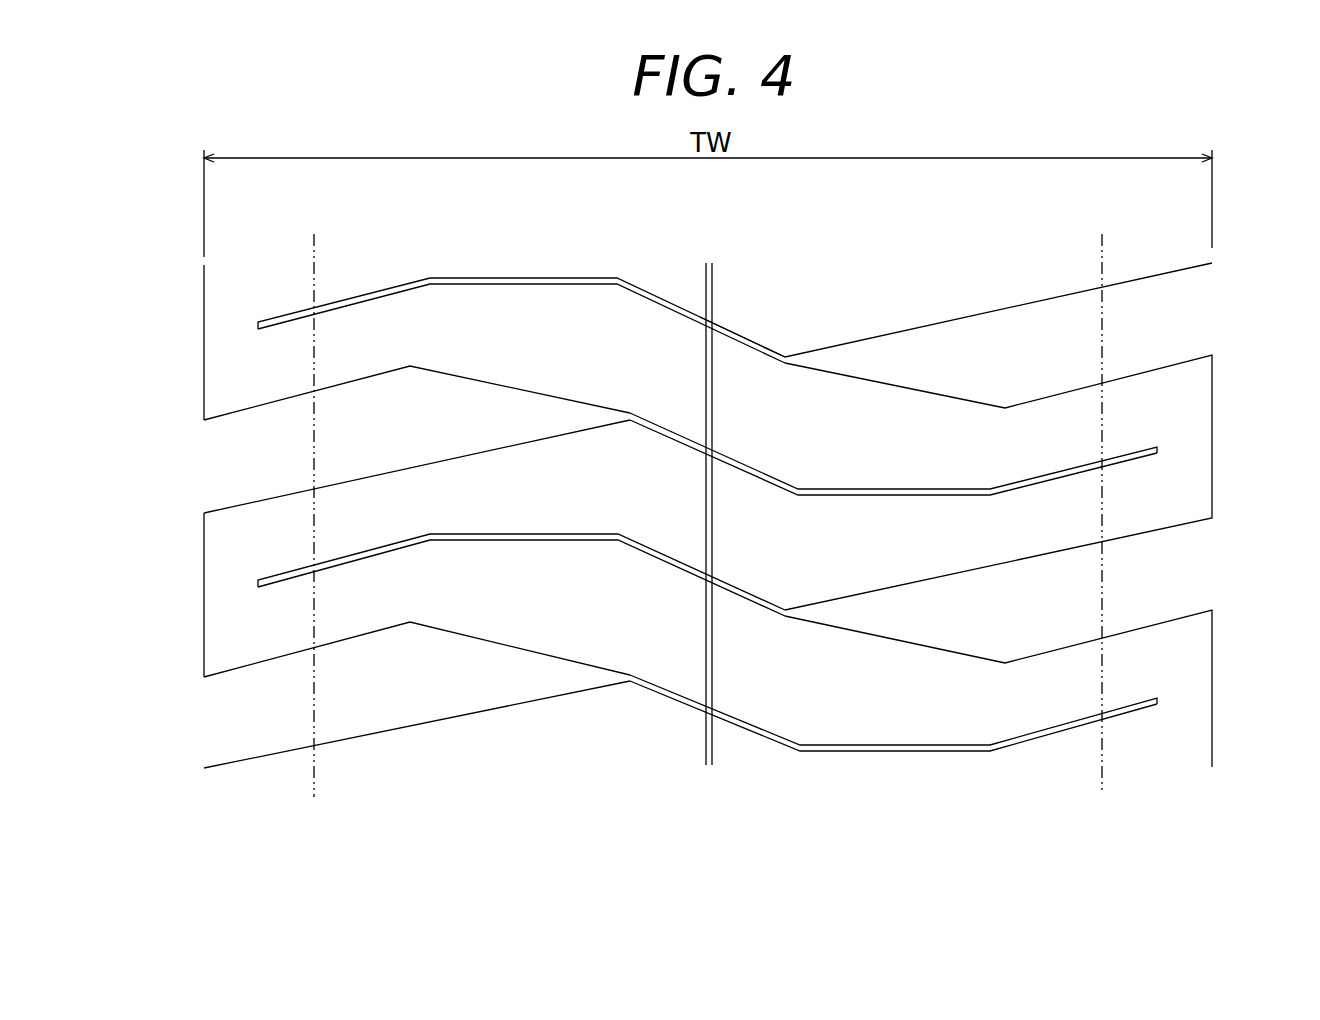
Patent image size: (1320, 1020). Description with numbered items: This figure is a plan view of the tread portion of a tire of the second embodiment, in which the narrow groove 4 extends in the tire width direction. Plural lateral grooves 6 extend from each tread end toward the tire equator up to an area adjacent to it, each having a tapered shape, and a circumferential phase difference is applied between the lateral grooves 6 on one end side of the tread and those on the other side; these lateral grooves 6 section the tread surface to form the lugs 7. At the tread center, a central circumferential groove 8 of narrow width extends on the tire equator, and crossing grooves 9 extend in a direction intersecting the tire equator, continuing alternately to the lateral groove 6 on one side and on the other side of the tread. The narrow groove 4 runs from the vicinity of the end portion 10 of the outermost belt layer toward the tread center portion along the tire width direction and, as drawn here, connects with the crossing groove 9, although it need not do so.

The narrow groove 4 is at (372, 297).
The lateral groove 6 is at (260, 449).
The lug 7 is at (232, 345).
The central circumferential groove 8 is at (707, 286).
The crossing groove 9 is at (742, 337).
The end portion of the outermost belt layer 10 is at (313, 274).